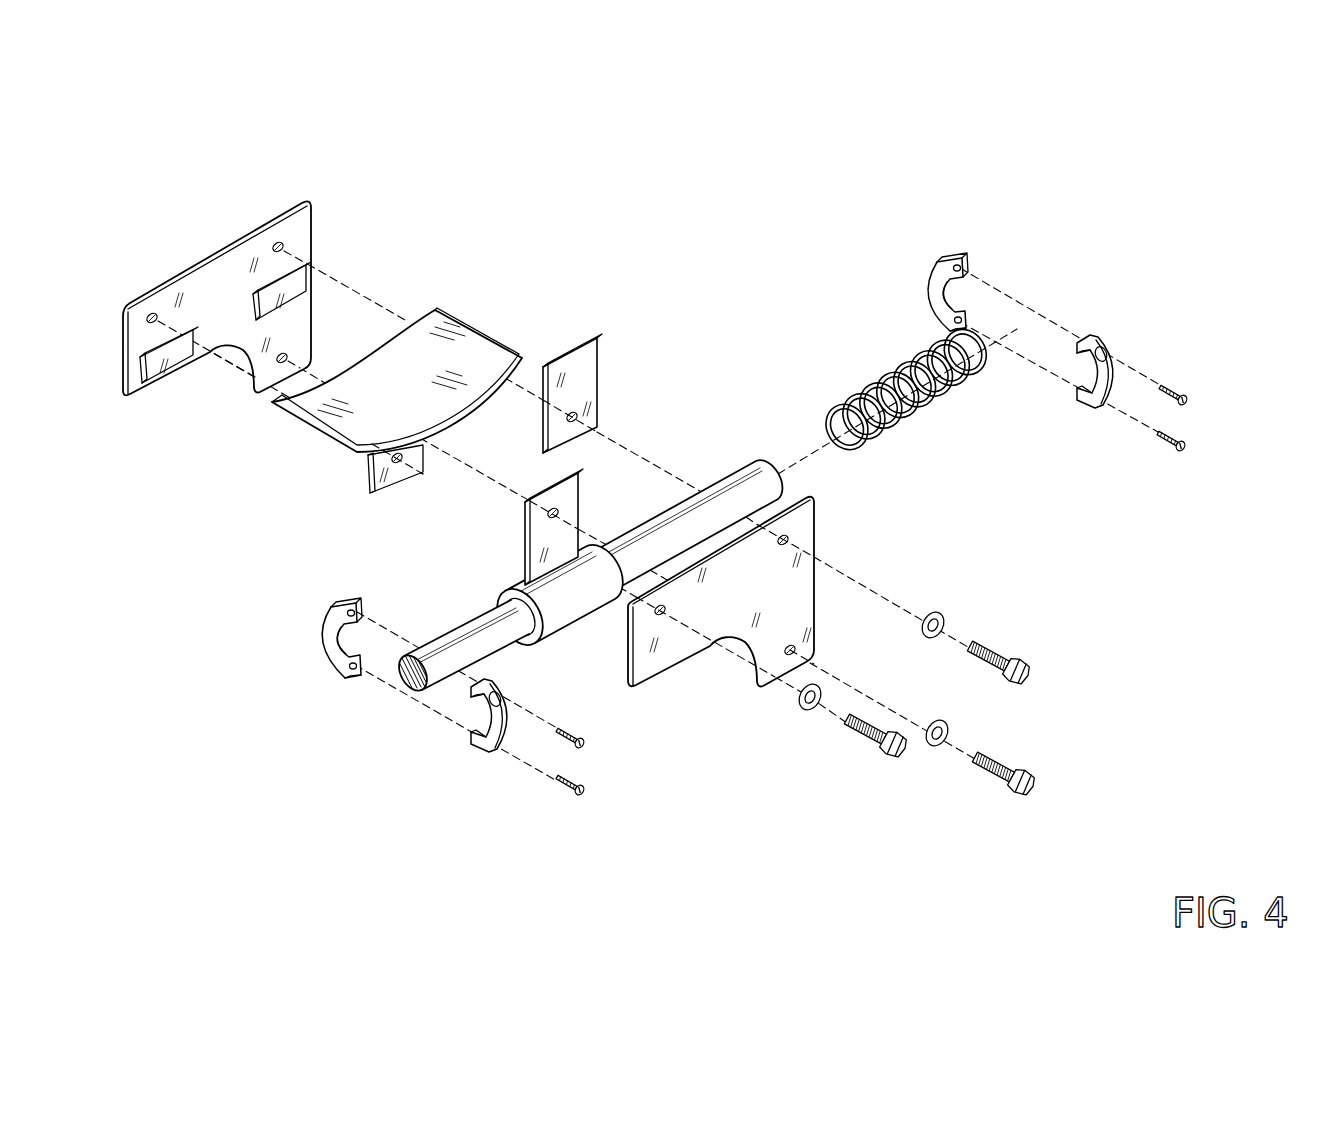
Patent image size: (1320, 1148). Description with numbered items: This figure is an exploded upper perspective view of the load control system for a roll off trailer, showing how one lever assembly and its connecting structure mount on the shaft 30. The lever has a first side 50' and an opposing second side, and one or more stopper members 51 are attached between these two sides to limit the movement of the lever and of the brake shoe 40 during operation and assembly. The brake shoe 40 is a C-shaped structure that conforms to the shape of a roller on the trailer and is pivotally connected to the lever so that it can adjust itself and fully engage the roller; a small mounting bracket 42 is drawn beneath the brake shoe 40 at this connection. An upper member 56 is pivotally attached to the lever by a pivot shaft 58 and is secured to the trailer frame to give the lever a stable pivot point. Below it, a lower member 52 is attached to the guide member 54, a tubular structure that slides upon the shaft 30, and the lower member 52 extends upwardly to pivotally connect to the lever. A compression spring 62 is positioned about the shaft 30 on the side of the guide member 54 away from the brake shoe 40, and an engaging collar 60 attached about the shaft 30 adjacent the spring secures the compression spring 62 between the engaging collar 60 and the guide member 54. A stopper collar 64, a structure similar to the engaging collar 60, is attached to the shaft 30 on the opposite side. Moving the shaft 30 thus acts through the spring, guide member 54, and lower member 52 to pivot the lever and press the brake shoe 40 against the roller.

The shaft 30 is at (733, 484).
The brake shoe 40 is at (483, 353).
The mounting bracket 42 is at (377, 492).
The first side 50' is at (292, 253).
The stopper member 51 is at (292, 290).
The lower member 52 is at (537, 568).
The guide member 54 is at (545, 614).
The upper member 56 is at (587, 367).
The pivot shaft 58 is at (1030, 680).
The engaging collar 60 is at (1092, 334).
The compression spring 62 is at (878, 384).
The stopper collar 64 is at (482, 743).